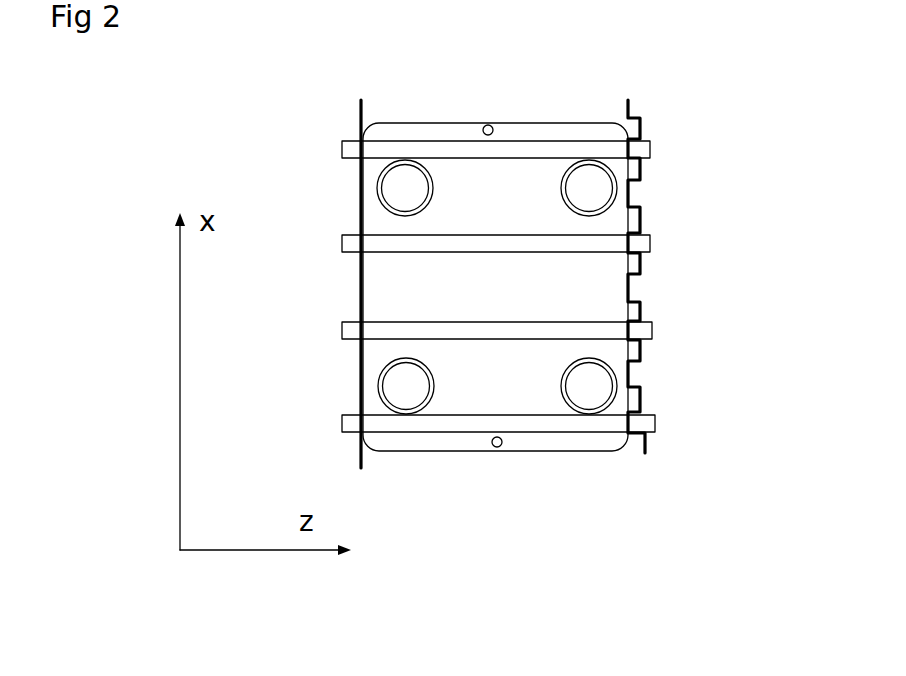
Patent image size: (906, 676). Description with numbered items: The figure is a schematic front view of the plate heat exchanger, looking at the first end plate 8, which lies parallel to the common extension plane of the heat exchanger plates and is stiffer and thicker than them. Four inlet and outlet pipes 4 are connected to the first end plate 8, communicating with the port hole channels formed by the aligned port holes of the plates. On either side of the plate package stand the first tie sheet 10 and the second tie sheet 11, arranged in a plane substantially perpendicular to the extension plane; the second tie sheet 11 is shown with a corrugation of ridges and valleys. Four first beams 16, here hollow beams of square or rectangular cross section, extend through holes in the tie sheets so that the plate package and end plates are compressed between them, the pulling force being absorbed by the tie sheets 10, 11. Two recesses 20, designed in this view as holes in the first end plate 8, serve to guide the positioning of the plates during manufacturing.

The inlet and outlet pipes 4 is at (433, 190).
The first end plate 8 is at (427, 275).
The first tie sheet 10 is at (360, 367).
The second tie sheet 11 is at (633, 110).
The first beams 16 is at (643, 148).
The recesses 20 is at (492, 124).